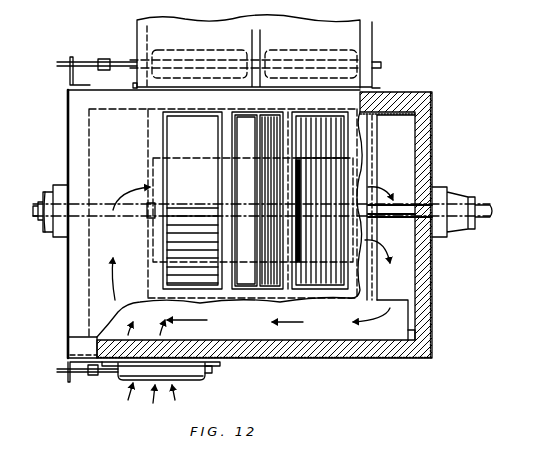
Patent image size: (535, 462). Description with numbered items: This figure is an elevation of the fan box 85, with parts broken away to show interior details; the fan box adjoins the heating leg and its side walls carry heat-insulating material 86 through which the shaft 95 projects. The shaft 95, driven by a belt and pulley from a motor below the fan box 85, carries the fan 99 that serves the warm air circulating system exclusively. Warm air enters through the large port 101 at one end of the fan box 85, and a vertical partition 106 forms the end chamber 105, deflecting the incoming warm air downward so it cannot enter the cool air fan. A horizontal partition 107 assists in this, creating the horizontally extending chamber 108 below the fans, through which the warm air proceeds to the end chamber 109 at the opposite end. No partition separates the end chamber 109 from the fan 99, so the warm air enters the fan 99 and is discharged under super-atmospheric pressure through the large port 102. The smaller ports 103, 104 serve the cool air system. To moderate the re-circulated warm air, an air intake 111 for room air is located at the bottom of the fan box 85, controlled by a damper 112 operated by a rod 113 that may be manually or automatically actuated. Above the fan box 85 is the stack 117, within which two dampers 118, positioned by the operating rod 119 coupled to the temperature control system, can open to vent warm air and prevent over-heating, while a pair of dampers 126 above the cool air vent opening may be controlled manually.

The fan box 85 is at (432, 90).
The heat-insulating material 86 is at (415, 95).
The shaft 95 is at (33, 208).
The fan 99 is at (172, 175).
The port 101 is at (325, 118).
The port 102 is at (185, 118).
The port 103 is at (248, 118).
The port 104 is at (268, 118).
The end chamber 105 is at (407, 158).
The vertical partition 106 is at (374, 146).
The horizontal partition 107 is at (225, 285).
The horizontally extending chamber 108 is at (330, 333).
The end chamber 109 is at (99, 148).
The air intake 111 is at (210, 372).
The damper 112 is at (185, 380).
The rod 113 is at (63, 378).
The stack 117 is at (366, 33).
The dampers 118 is at (206, 50).
The operating rod 119 is at (62, 60).
The dampers 126 is at (308, 52).